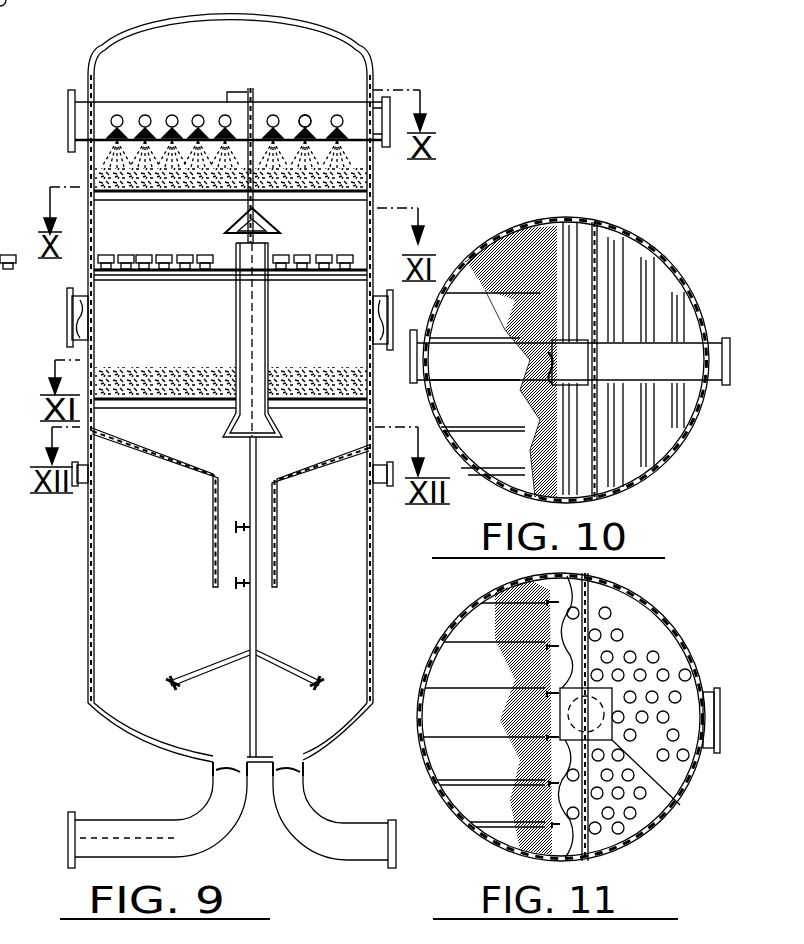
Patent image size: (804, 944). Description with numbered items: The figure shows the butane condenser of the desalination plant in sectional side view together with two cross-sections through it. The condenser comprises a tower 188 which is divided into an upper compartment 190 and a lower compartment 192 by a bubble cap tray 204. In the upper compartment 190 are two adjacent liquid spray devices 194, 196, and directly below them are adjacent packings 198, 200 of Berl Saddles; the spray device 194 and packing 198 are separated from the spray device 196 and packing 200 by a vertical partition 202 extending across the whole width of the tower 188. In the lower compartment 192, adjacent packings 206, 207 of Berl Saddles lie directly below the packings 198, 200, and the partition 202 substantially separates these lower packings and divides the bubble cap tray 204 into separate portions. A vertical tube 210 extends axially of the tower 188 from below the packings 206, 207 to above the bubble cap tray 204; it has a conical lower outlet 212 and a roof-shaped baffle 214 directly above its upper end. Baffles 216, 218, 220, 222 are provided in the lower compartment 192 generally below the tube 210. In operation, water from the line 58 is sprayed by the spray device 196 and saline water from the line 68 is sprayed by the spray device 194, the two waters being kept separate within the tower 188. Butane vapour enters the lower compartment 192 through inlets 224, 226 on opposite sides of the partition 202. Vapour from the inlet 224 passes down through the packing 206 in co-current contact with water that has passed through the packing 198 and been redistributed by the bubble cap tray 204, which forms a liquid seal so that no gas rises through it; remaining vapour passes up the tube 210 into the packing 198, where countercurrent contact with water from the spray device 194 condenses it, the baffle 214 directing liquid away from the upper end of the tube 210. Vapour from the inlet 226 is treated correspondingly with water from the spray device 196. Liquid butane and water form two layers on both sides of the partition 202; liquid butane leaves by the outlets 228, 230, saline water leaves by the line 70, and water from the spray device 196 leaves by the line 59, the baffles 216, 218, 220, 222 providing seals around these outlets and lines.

In FIG. 9, the line 58 is at (368, 126).
In FIG. 9, the line 59 is at (341, 838).
In FIG. 9, the line 68 is at (80, 115).
In FIG. 9, the line 70 is at (170, 833).
In FIG. 9, the tower 188 is at (388, 80).
In FIG. 10, the tower 188 is at (654, 242).
In FIG. 11, the tower 188 is at (473, 603).
In FIG. 9, the upper compartment 190 is at (200, 253).
In FIG. 9, the lower compartment 192 is at (357, 341).
In FIG. 9, the liquid spray device 194 is at (149, 116).
In FIG. 10, the liquid spray device 194 is at (571, 220).
In FIG. 9, the liquid spray device 196 is at (310, 113).
In FIG. 10, the liquid spray device 196 is at (652, 288).
In FIG. 9, the packing 198 is at (166, 195).
In FIG. 9, the packing 200 is at (372, 186).
In FIG. 9, the vertical partition 202 is at (253, 93).
In FIG. 10, the vertical partition 202 is at (599, 238).
In FIG. 9, the bubble cap tray 204 is at (231, 275).
In FIG. 11, the bubble cap tray 204 is at (652, 668).
In FIG. 9, the packing 206 is at (223, 320).
In FIG. 9, the packing 207 is at (357, 390).
In FIG. 9, the vertical tube 210 is at (269, 299).
In FIG. 11, the vertical tube 210 is at (606, 680).
In FIG. 9, the conical lower outlet 212 is at (271, 433).
In FIG. 9, the roof-shaped baffle 214 is at (266, 226).
In FIG. 11, the roof-shaped baffle 214 is at (668, 790).
In FIG. 9, the baffle 216 is at (212, 553).
In FIG. 9, the baffle 218 is at (280, 563).
In FIG. 9, the baffle 220 is at (222, 673).
In FIG. 9, the baffle 222 is at (276, 673).
In FIG. 9, the inlet 224 is at (90, 318).
In FIG. 9, the inlet 226 is at (379, 346).
In FIG. 9, the outlet 228 is at (85, 484).
In FIG. 9, the outlet 230 is at (381, 484).